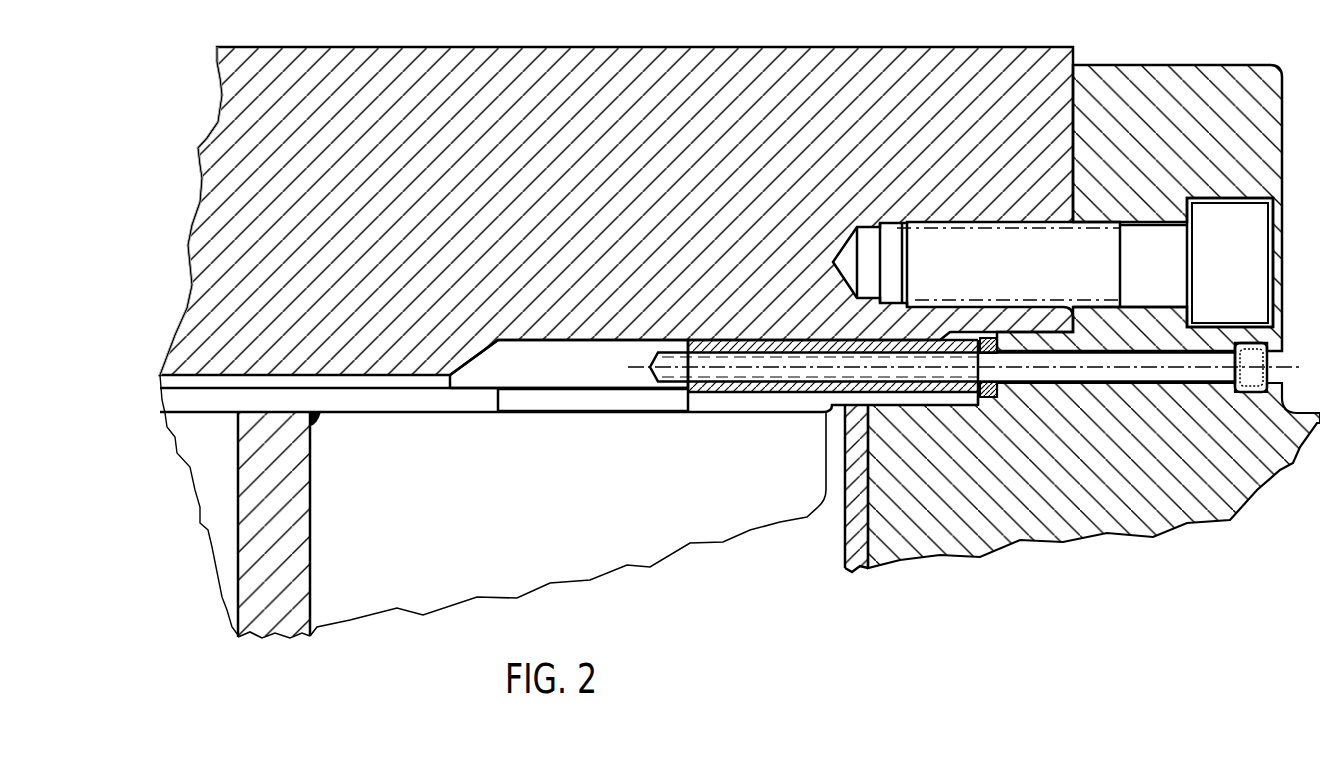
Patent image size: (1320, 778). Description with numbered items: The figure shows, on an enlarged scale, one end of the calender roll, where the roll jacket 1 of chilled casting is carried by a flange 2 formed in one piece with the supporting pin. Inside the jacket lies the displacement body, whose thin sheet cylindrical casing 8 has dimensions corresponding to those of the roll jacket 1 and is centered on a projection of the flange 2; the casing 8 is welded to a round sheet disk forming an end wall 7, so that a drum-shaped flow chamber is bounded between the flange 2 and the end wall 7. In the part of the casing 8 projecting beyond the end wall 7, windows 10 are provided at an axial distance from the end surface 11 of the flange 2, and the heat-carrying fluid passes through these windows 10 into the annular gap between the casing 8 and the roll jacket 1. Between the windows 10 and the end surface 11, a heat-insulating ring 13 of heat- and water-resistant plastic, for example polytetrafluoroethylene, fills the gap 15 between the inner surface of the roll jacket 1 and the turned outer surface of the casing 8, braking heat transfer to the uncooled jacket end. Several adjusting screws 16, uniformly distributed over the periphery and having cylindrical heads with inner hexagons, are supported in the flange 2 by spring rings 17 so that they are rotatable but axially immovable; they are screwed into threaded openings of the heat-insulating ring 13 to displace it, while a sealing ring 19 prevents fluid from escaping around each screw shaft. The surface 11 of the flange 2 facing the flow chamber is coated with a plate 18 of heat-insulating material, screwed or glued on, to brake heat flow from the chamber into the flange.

The roll jacket 1 is at (218, 176).
The flange 2 is at (1218, 173).
The end wall 7 is at (300, 532).
The casing 8 is at (395, 405).
The windows 10 is at (532, 405).
The end surface 11 is at (846, 558).
The heat-insulating ring 13 is at (718, 383).
The gap 15 is at (605, 373).
The adjusting screws 16 is at (1115, 378).
The spring rings 17 is at (1272, 395).
The plate 18 is at (853, 515).
The sealing ring 19 is at (990, 397).